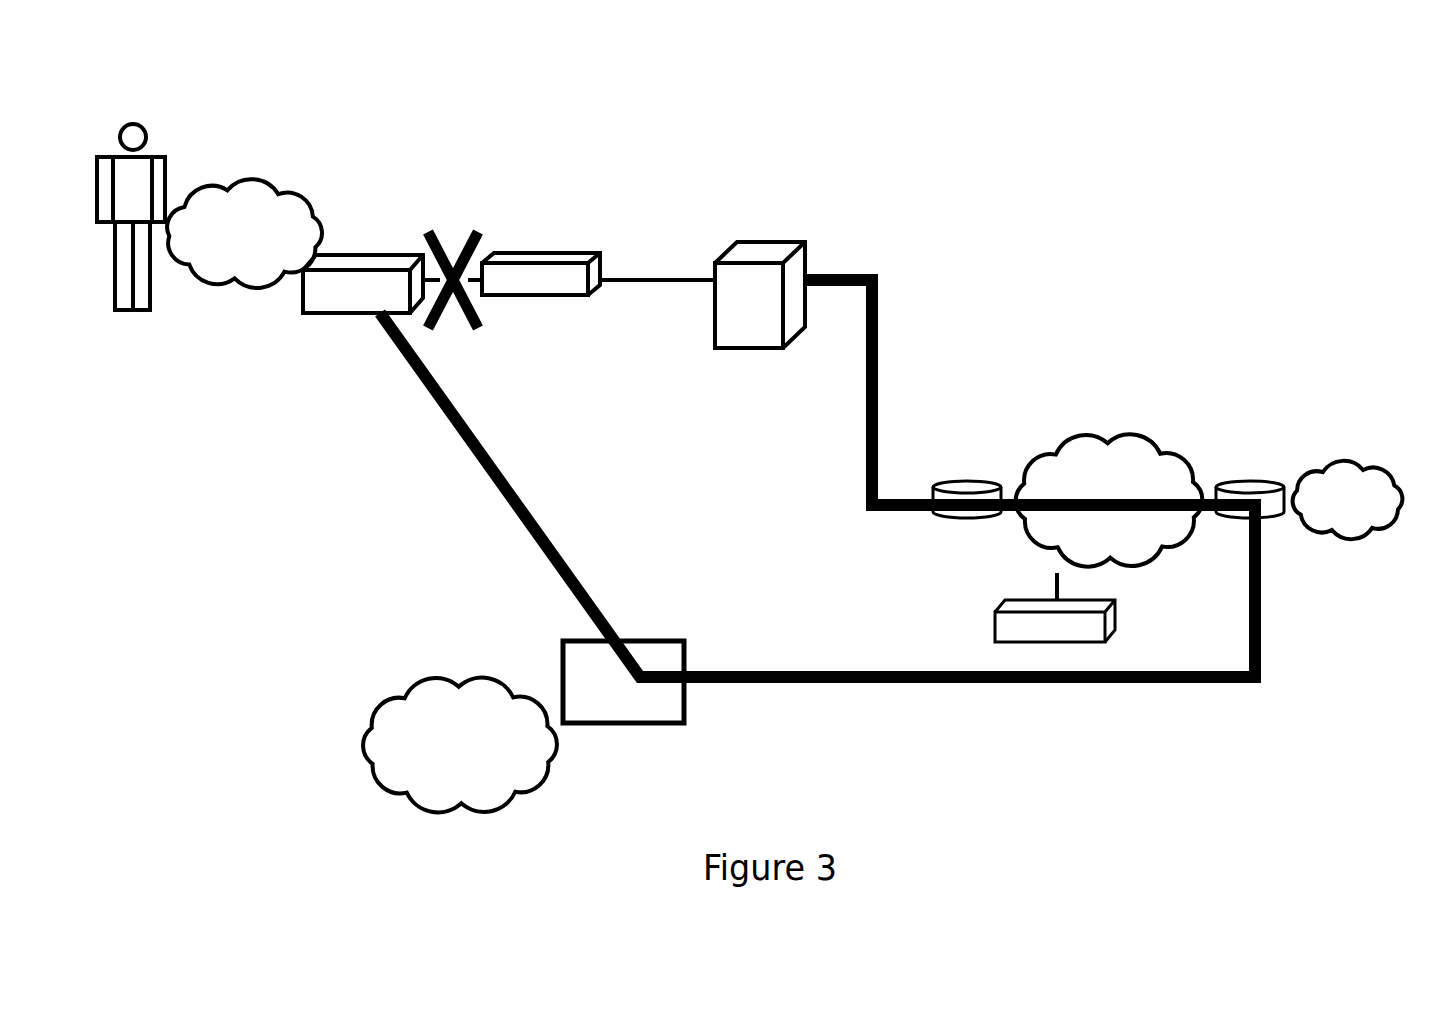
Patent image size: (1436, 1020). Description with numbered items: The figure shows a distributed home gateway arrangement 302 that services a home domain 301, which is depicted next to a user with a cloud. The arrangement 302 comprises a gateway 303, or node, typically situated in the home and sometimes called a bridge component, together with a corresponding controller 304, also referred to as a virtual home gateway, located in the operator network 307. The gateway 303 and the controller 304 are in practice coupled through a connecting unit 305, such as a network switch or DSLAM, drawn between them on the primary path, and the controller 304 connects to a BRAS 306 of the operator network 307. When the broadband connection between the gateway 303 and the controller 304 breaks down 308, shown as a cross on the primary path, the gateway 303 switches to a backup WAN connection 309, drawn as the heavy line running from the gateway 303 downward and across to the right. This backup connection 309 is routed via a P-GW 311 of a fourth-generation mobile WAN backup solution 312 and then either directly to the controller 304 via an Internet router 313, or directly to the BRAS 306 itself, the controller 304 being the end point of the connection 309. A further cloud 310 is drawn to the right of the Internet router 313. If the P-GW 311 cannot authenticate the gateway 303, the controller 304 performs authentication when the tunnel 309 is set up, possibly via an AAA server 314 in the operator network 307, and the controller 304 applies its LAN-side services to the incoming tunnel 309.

The home domain 301 is at (243, 295).
The distributed home gateway arrangement 302 is at (307, 150).
The gateway 303 is at (357, 313).
The controller 304 is at (747, 348).
The network link device 305 is at (535, 298).
The BRAS 306 is at (968, 483).
The operator network 307 is at (1112, 435).
The breakdown 308 is at (427, 250).
The backup WAN connection 309 is at (536, 543).
The external network cloud 310 is at (1347, 522).
The P-GW 311 is at (627, 723).
The 4G WAN backup solution 312 is at (352, 745).
The Internet router 313 is at (1250, 482).
The AAA server 314 is at (993, 625).